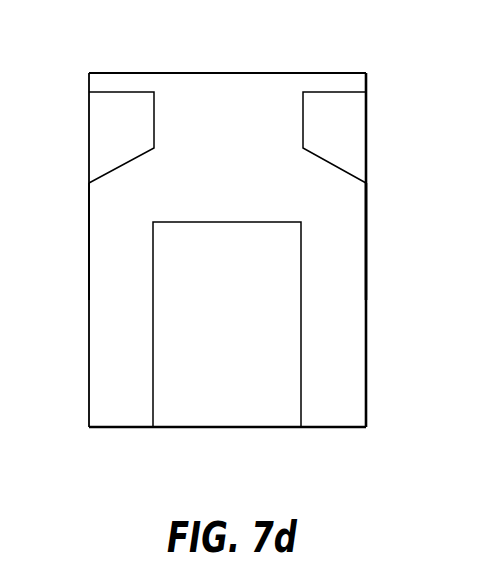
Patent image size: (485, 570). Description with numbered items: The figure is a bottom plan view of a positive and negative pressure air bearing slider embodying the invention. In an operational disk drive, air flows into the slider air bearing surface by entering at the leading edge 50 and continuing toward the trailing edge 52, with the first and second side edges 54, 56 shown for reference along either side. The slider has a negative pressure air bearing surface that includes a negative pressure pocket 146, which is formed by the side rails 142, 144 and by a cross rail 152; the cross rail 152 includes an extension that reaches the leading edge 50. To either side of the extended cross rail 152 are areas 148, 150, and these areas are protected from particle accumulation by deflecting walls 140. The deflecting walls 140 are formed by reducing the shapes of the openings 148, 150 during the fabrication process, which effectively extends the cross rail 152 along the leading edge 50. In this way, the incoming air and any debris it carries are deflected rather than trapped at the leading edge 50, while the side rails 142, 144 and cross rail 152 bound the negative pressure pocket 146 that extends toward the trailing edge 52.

The leading edge 50 is at (225, 73).
The trailing edge 52 is at (325, 428).
The first side edge 54 is at (89, 336).
The second side edge 56 is at (366, 336).
The deflecting walls 140 is at (117, 76).
The side rail 142 is at (91, 231).
The side rail 144 is at (362, 244).
The negative pressure pocket 146 is at (210, 312).
The area (opening) 148 is at (95, 126).
The area (opening) 150 is at (357, 134).
The cross rail 152 is at (246, 156).